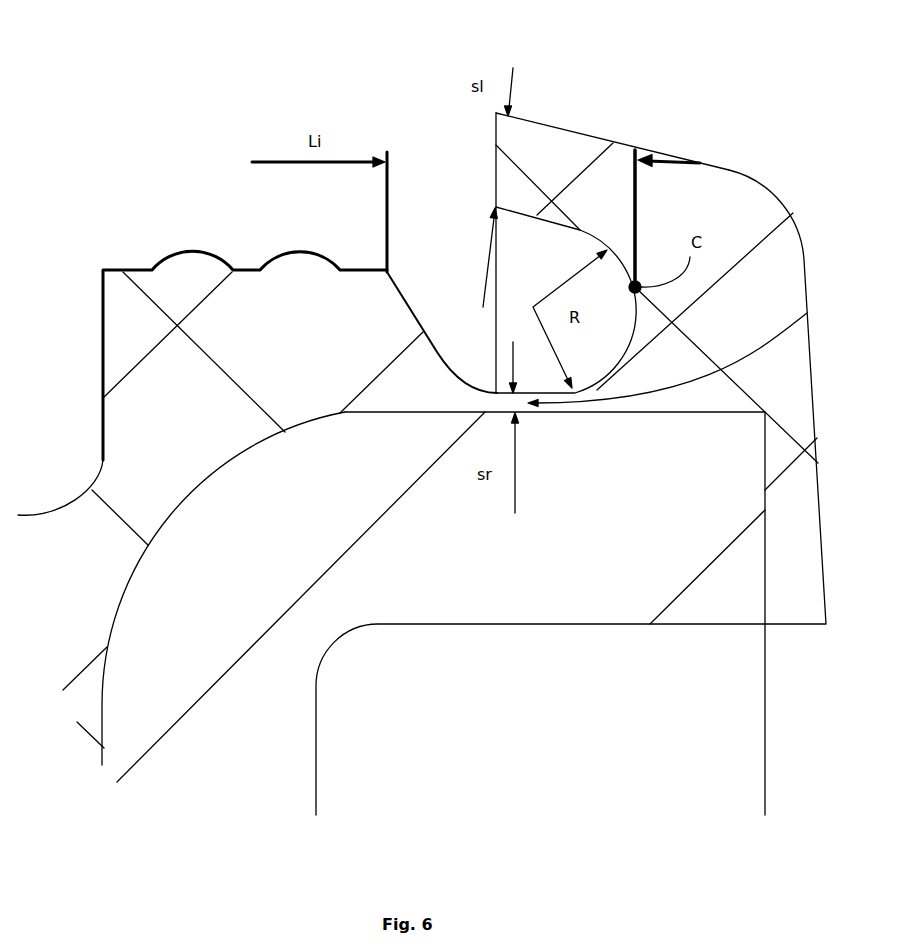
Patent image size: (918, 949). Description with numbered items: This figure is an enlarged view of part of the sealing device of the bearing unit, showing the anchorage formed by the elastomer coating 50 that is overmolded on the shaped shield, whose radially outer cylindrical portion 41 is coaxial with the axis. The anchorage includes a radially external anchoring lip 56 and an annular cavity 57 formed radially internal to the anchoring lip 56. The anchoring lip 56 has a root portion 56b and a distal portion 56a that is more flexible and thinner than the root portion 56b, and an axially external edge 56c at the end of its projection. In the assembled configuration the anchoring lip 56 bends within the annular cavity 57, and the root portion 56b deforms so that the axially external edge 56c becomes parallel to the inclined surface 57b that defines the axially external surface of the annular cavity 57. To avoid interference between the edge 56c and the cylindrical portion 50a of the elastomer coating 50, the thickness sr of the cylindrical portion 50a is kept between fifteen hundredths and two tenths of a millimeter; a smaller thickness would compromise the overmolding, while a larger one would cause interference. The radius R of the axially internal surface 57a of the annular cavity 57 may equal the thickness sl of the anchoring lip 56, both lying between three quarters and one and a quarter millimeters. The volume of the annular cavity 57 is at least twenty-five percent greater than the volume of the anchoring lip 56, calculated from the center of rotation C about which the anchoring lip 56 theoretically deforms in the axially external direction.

The radially outer cylindrical portion 41 is at (555, 613).
The elastomer coating 50 is at (753, 295).
The cylindrical portion 50a is at (807, 313).
The anchoring lip 56 is at (635, 128).
The distal portion 56a is at (530, 150).
The root portion 56b is at (677, 222).
The axially external edge 56c is at (492, 155).
The annular cavity 57 is at (472, 327).
The axially internal surface 57a is at (628, 327).
The inclined surface 57b is at (412, 297).